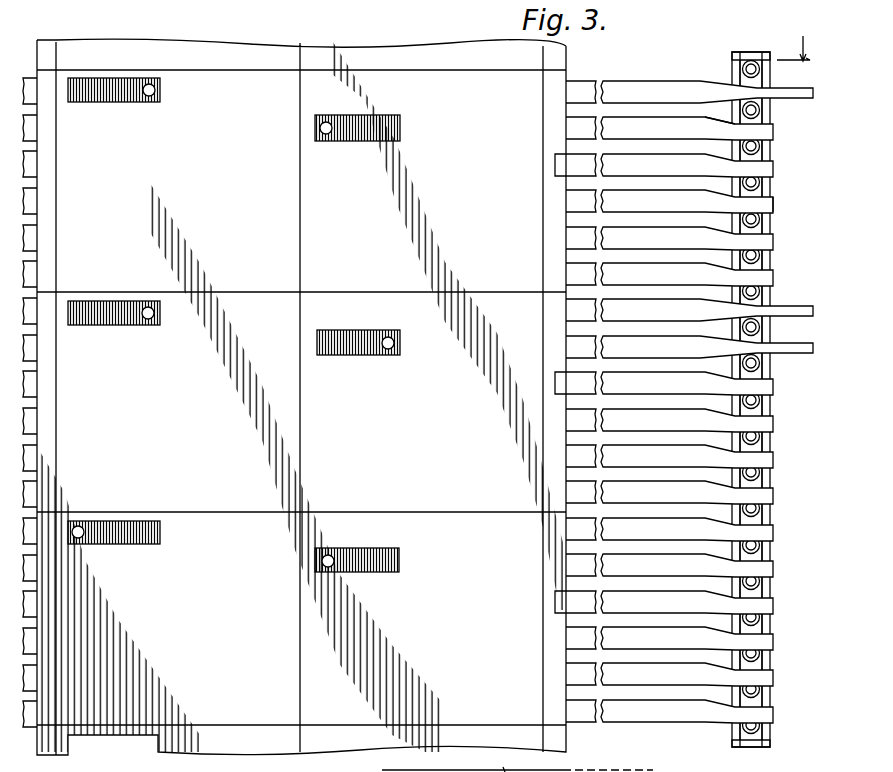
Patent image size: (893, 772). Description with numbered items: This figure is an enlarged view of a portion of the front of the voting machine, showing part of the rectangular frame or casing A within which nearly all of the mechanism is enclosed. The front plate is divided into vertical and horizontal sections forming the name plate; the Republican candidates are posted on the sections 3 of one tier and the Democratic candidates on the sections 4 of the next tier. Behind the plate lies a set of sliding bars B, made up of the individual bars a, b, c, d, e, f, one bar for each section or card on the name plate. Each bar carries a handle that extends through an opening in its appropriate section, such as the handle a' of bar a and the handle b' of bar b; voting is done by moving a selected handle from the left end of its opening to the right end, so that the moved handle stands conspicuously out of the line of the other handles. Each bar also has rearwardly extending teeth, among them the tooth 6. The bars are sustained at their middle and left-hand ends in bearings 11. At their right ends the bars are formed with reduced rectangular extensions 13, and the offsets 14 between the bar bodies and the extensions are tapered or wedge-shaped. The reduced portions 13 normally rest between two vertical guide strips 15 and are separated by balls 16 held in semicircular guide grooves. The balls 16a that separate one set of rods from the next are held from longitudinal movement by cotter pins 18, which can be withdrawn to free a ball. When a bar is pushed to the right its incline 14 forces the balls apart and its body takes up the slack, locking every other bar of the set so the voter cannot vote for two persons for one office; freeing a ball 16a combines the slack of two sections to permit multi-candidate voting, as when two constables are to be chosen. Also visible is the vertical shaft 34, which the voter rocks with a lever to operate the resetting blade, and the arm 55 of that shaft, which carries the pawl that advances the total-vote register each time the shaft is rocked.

The frame or casing A is at (309, 397).
The set of bars B is at (707, 184).
The sections 3 is at (295, 461).
The sections 4 is at (449, 326).
The handle a' is at (135, 311).
The handle b' is at (371, 326).
The bar a is at (707, 92).
The bar b is at (687, 129).
The bar c is at (687, 165).
The bar d is at (687, 202).
The bar e is at (687, 238).
The bar f is at (687, 275).
The tooth 6 is at (725, 61).
The bearing 11 is at (752, 742).
The rectangular extension 13 is at (788, 303).
The offset 14 is at (722, 123).
The vertical guide strip 15 is at (774, 220).
The ball 16 is at (768, 613).
The ball 16a is at (768, 724).
The cotter pin 18 is at (732, 278).
The vertical shaft 34 is at (472, 760).
The arm 55 is at (560, 771).